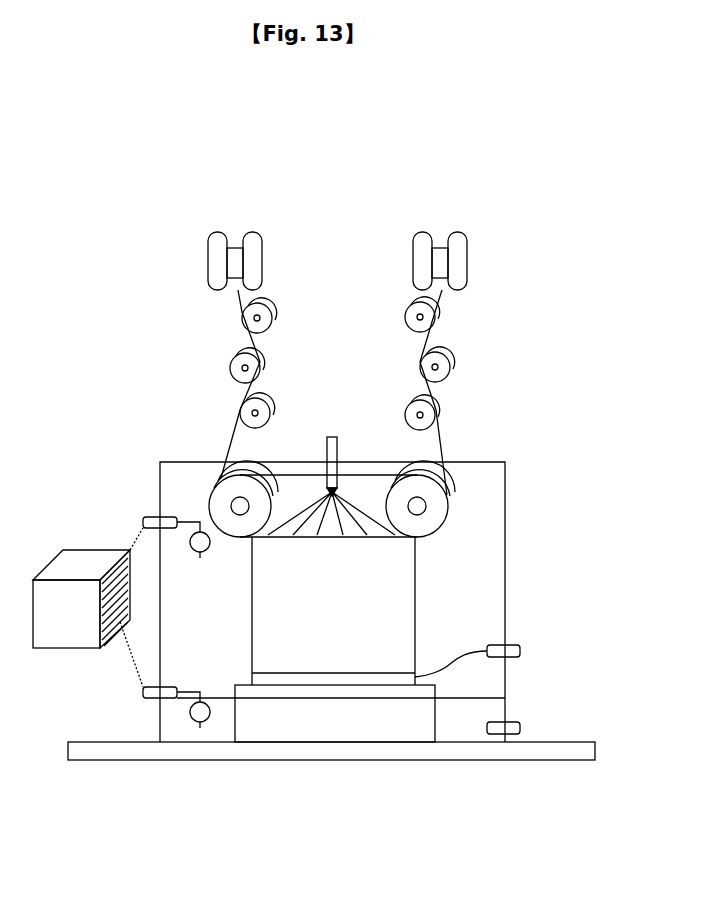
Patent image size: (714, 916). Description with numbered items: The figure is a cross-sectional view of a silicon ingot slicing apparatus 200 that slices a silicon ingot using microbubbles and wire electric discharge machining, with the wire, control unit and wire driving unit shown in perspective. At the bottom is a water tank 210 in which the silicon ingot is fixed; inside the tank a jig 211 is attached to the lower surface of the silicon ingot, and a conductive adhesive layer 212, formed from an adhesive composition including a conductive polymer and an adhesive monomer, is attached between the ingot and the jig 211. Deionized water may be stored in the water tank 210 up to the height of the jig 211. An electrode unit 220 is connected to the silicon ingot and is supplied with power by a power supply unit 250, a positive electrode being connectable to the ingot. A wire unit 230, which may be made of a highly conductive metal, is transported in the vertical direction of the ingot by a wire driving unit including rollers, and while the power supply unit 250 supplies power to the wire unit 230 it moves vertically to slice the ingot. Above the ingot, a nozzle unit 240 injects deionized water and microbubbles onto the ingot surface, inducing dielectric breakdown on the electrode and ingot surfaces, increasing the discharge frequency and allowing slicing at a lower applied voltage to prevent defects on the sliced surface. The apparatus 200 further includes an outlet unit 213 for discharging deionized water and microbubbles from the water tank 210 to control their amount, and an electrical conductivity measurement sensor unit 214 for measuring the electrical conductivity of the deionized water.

The silicon ingot slicing apparatus 200 is at (532, 233).
The water tank 210 is at (462, 732).
The jig 211 is at (340, 732).
The conductive adhesive layer 212 is at (278, 675).
The outlet unit 213 is at (520, 728).
The electrical conductivity measurement sensor unit 214 is at (143, 520).
The electrode unit 220 is at (423, 363).
The wire unit 230 is at (444, 452).
The nozzle unit 240 is at (338, 443).
The power supply unit 250 is at (520, 651).